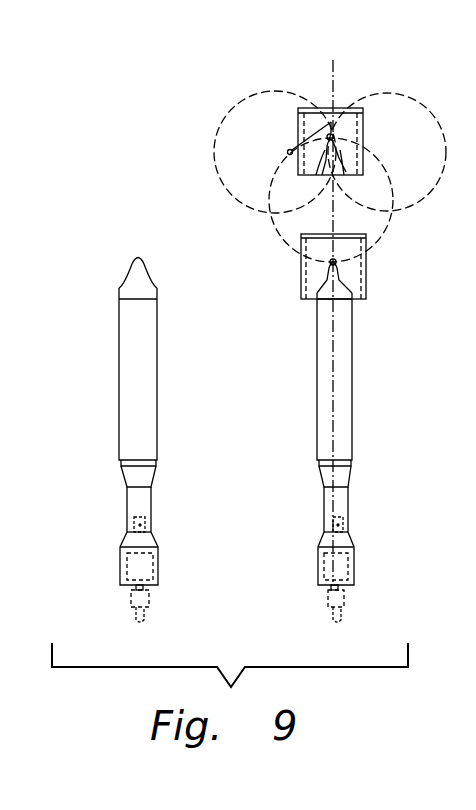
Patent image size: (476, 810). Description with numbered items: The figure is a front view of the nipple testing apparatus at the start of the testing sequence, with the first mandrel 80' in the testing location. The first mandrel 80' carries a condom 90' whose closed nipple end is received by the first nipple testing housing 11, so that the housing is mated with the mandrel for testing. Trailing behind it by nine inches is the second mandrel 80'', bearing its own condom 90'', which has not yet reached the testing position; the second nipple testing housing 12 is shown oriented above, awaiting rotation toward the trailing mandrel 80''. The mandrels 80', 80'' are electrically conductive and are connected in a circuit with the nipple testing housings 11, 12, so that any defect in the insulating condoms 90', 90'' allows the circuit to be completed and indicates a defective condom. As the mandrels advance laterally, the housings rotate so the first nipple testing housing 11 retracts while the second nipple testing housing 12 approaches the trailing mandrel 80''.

The second nipple testing housing 12 is at (331, 131).
The first nipple testing housing 11 is at (366, 270).
The condom 90' is at (376, 359).
The first mandrel 80' is at (380, 541).
The condom 90'' is at (185, 359).
The second mandrel 80'' is at (186, 541).